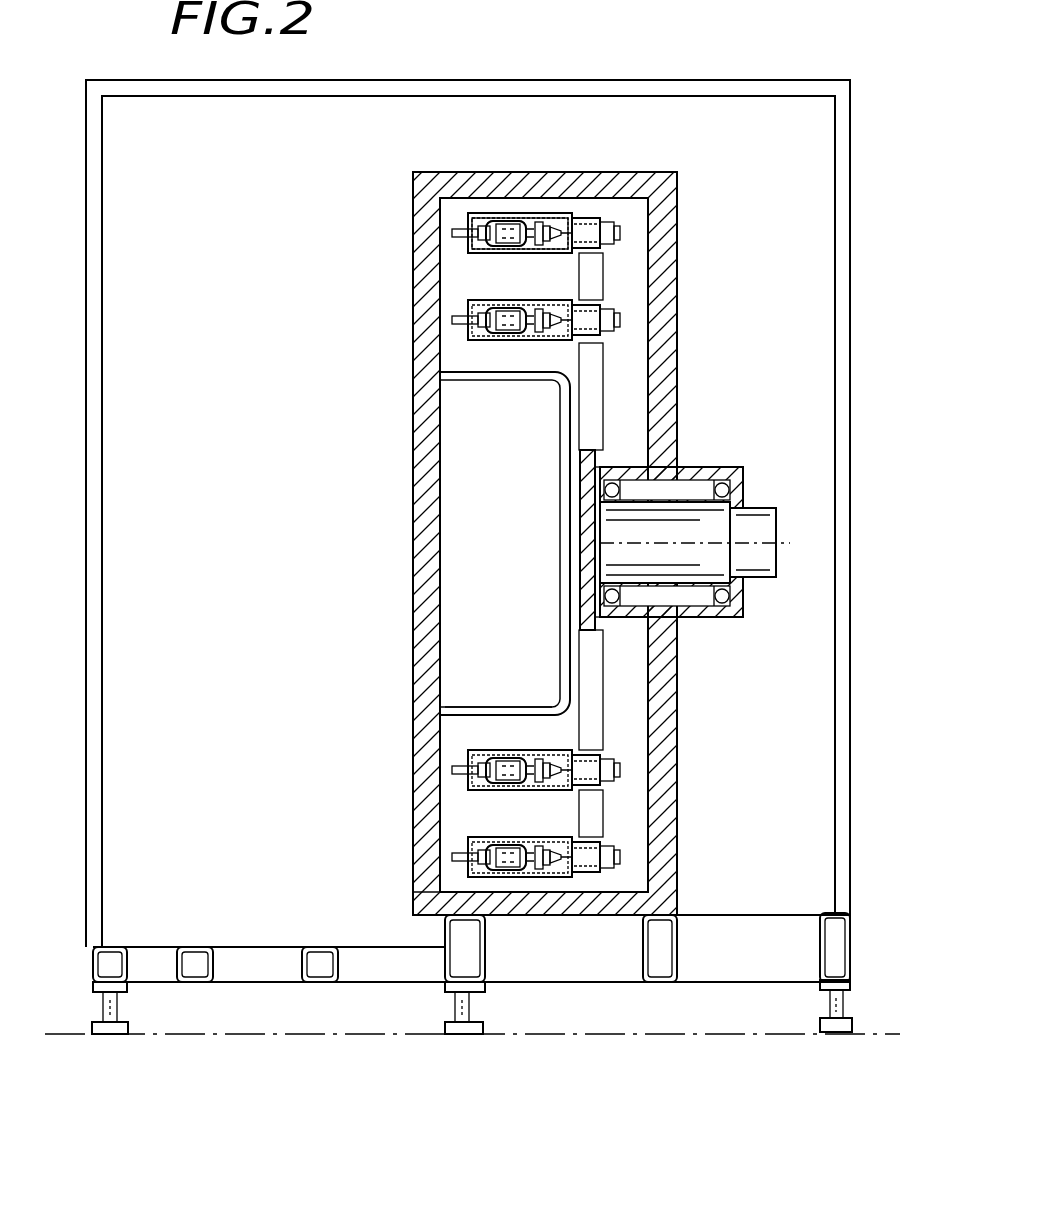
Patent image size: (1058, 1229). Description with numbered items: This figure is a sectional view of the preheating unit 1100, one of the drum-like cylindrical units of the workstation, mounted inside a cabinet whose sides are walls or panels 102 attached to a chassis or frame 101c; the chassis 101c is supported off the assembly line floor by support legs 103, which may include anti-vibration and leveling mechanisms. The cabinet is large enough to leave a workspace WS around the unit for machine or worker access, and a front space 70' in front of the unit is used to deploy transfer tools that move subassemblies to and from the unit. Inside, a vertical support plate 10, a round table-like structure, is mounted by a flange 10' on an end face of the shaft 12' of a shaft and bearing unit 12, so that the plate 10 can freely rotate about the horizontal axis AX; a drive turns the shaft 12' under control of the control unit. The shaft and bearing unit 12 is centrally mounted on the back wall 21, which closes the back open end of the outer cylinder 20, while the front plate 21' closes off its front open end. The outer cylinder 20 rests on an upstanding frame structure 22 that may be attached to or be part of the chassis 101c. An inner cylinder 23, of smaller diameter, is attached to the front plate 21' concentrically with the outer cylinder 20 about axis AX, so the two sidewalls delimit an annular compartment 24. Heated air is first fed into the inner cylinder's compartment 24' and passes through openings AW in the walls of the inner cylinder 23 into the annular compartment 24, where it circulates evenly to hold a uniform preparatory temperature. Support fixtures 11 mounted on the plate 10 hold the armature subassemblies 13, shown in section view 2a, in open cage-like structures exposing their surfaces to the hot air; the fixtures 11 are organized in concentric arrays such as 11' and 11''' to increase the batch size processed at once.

The preheating unit 1100 is at (476, 110).
The walls or panels 102 is at (835, 125).
The outer cylinder 20 is at (648, 178).
The back wall 21 is at (691, 545).
The front plate 21' is at (376, 545).
The upstanding frame structure 22 is at (693, 927).
The inner cylinder 23 is at (453, 707).
The annular compartment 24 is at (397, 285).
The compartment of the inner cylinder 24' is at (460, 543).
The spindle unit 2a is at (557, 203).
The armature subassemblies 13 is at (510, 230).
The support fixtures 11 is at (515, 545).
The array of support fixtures 11' is at (448, 770).
The array of support fixtures 11''' is at (441, 857).
The vertical support plate 10 is at (671, 483).
The flange 10' is at (617, 553).
The shaft and bearing unit 12 is at (760, 483).
The shaft 12' is at (552, 540).
The horizontal axis AX is at (783, 543).
The openings AW is at (547, 350).
The workspace WS is at (245, 482).
The front space 70' is at (321, 614).
The chassis or frame 101c is at (833, 948).
The support legs 103 is at (120, 1010).